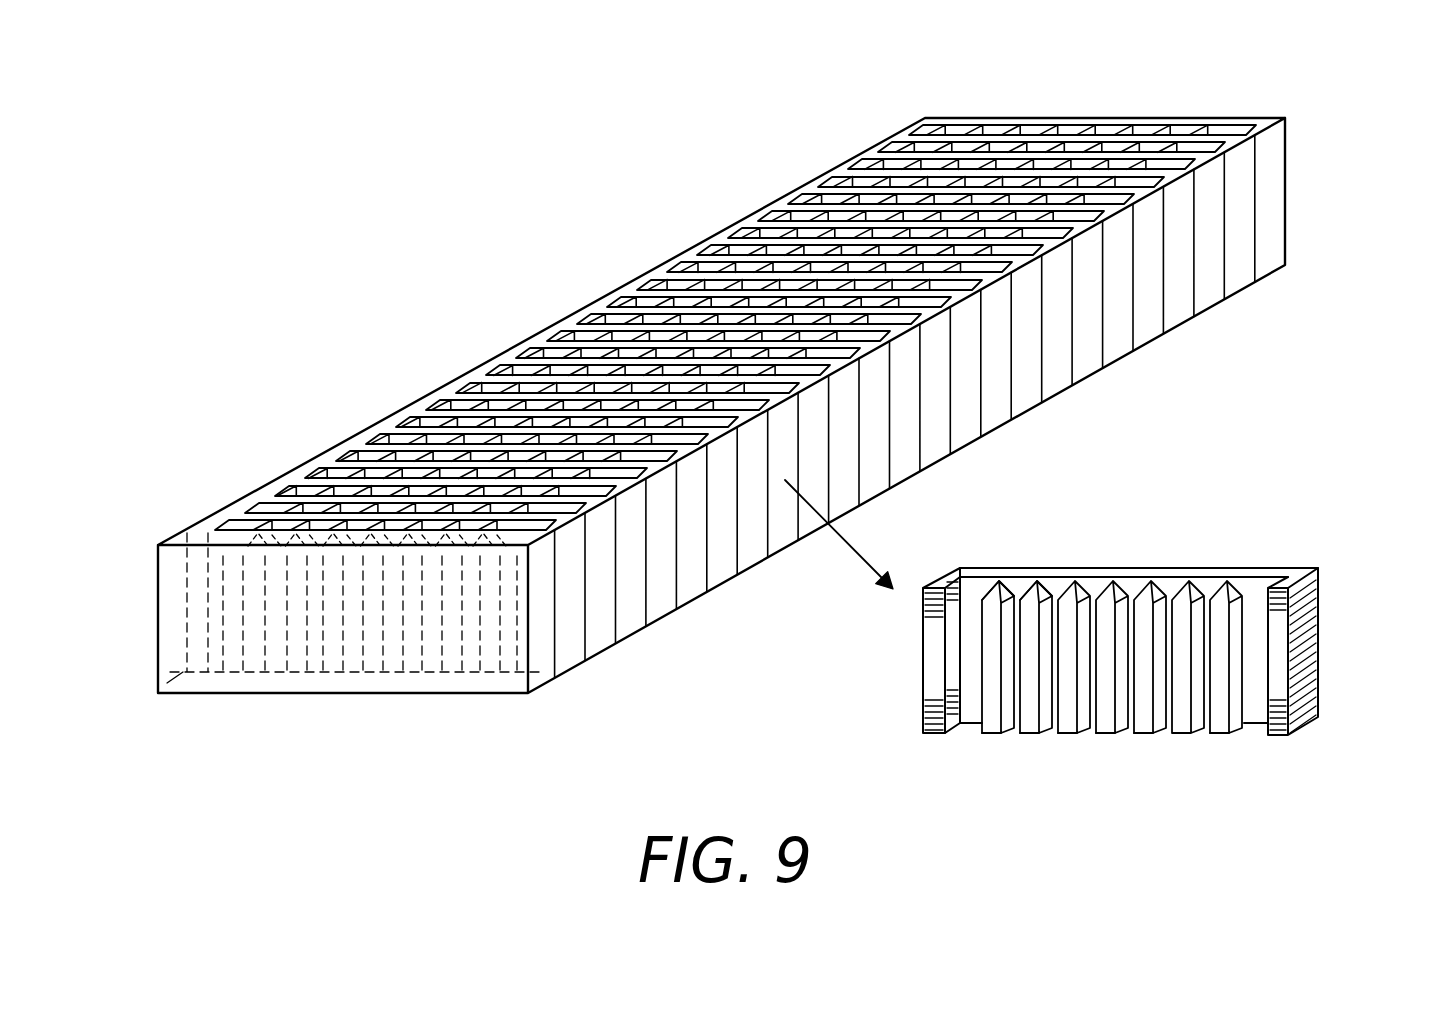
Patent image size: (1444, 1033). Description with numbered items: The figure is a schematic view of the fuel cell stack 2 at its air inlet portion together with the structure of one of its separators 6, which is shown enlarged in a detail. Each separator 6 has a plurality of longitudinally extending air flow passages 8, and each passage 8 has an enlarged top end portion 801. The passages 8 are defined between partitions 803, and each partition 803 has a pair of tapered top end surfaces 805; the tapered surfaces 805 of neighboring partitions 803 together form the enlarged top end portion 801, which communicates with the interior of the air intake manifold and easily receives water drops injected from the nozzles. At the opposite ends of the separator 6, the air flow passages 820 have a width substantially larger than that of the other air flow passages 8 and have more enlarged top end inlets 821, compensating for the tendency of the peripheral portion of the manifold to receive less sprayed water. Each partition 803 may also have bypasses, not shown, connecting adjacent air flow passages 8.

The fuel cell stack 2 is at (488, 283).
The enlarged top end portion 801 is at (652, 320).
The enlarged top end inlet 821 is at (790, 213).
The separator 6 is at (1378, 613).
The tapered top end surface 805 is at (1042, 583).
The air flow passage 8 is at (1008, 730).
The partition 803 is at (1220, 733).
The air flow passage at opposite ends 820 is at (972, 713).